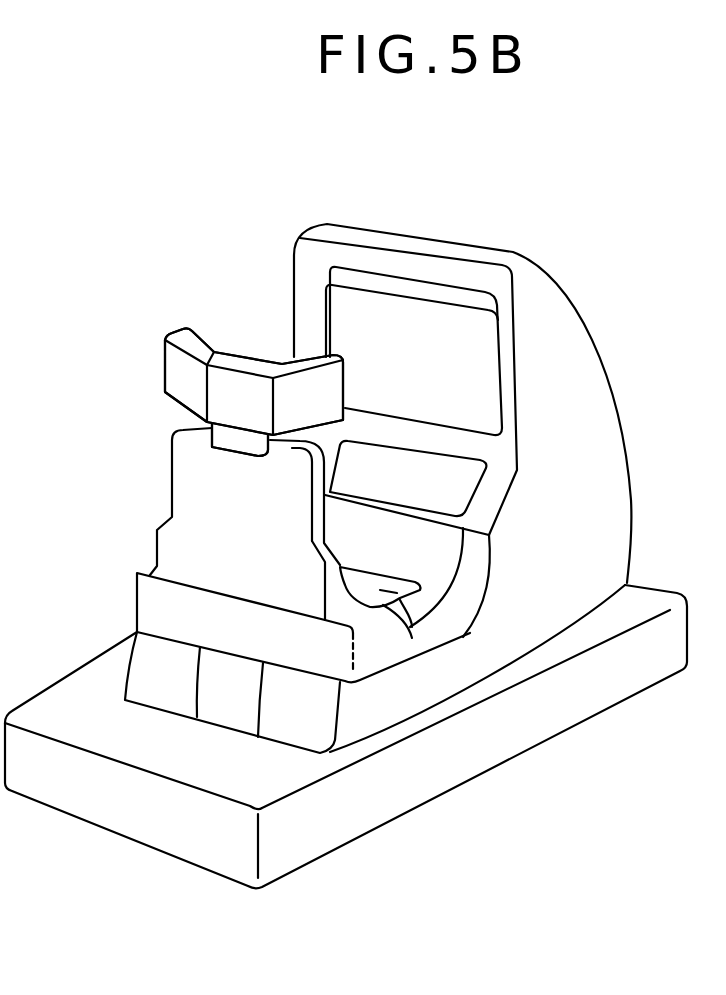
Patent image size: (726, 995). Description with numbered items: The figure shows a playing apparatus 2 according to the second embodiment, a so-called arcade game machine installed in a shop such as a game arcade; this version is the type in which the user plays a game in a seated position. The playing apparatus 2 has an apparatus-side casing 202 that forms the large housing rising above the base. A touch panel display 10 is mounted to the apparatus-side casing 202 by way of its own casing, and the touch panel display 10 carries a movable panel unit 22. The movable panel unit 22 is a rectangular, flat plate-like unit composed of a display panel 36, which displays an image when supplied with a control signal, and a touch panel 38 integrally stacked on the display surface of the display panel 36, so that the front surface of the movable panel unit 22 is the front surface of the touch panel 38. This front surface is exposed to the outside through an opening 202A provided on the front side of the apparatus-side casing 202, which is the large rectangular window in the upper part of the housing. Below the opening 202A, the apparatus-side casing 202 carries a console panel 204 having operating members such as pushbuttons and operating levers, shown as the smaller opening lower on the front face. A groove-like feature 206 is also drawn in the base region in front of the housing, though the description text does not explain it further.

The playing apparatus 2 is at (545, 217).
The touch panel display 10 is at (474, 387).
The movable panel unit 22 is at (478, 337).
The display panel 36 is at (343, 305).
The touch panel 38 is at (343, 305).
The apparatus-side casing 202 is at (585, 469).
The opening 202A is at (477, 311).
The console panel 204 is at (460, 490).
The groove 206 is at (423, 593).